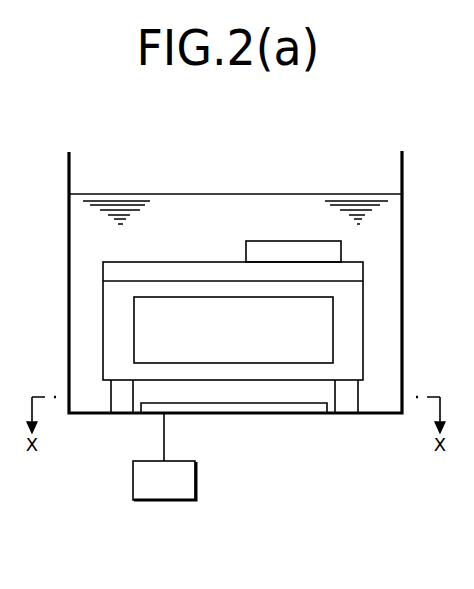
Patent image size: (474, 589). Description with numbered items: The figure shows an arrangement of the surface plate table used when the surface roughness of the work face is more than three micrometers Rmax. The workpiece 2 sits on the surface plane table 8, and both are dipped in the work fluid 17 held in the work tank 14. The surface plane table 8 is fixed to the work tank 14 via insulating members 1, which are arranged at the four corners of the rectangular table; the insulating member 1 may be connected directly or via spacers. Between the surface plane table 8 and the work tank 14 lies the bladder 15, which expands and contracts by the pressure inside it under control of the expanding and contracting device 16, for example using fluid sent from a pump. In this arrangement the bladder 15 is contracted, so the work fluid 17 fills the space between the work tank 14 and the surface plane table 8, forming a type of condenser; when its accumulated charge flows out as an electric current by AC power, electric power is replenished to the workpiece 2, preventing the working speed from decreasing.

The insulating member 1 is at (120, 405).
The workpiece 2 is at (285, 248).
The surface plane table 8 is at (353, 289).
The work tank 14 is at (402, 316).
The bladder 15 is at (271, 405).
The expanding and contracting device 16 is at (147, 503).
The work fluid 17 is at (178, 206).